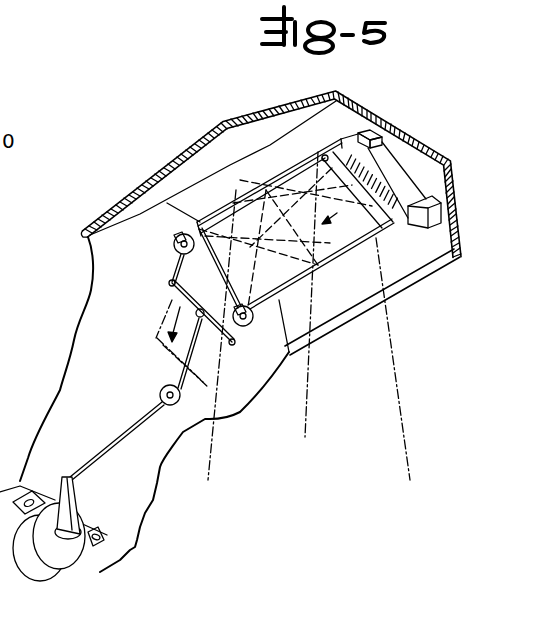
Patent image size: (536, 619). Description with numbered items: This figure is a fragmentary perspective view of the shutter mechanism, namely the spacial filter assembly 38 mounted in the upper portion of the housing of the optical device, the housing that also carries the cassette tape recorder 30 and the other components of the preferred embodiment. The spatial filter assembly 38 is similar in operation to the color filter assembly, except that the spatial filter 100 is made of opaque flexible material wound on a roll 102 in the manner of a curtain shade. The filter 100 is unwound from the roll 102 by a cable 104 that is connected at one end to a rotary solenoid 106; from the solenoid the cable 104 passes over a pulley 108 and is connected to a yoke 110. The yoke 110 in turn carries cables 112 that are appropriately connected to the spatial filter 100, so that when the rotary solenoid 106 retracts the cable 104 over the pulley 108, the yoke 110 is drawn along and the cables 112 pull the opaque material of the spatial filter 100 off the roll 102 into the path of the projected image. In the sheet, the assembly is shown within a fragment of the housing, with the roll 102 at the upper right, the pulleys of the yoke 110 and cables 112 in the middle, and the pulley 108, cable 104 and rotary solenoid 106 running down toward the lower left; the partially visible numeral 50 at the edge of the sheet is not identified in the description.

The cassette tape recorder 30 is at (307, 609).
The spacial filter assembly 38 is at (281, 432).
The cart member 50 is at (9, 333).
The spatial filter 100 is at (390, 208).
The roll 102 is at (430, 235).
The cable 104 is at (107, 457).
The rotary solenoid 106 is at (55, 568).
The pulley 108 is at (160, 395).
The yoke 110 is at (186, 300).
The cables 112 is at (176, 240).